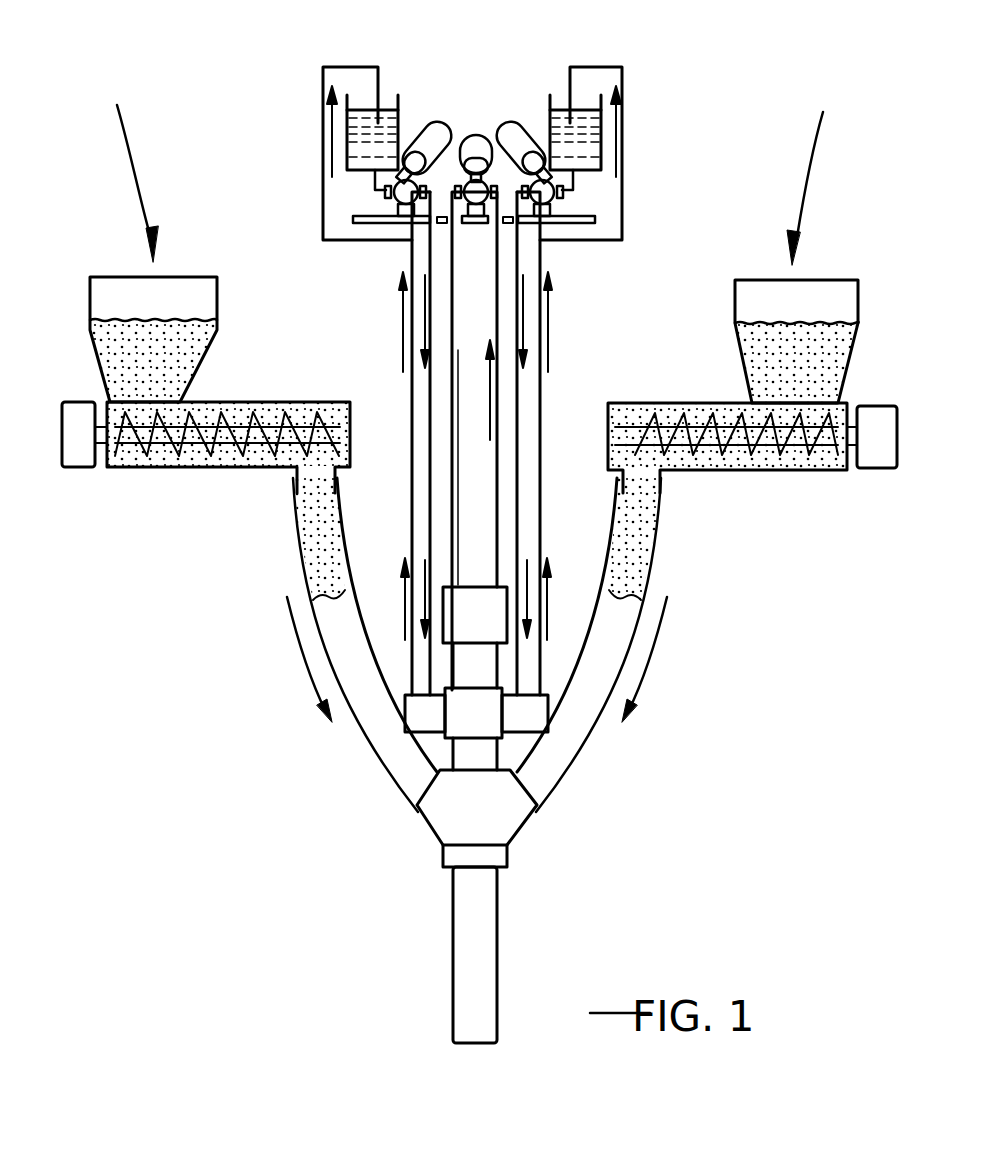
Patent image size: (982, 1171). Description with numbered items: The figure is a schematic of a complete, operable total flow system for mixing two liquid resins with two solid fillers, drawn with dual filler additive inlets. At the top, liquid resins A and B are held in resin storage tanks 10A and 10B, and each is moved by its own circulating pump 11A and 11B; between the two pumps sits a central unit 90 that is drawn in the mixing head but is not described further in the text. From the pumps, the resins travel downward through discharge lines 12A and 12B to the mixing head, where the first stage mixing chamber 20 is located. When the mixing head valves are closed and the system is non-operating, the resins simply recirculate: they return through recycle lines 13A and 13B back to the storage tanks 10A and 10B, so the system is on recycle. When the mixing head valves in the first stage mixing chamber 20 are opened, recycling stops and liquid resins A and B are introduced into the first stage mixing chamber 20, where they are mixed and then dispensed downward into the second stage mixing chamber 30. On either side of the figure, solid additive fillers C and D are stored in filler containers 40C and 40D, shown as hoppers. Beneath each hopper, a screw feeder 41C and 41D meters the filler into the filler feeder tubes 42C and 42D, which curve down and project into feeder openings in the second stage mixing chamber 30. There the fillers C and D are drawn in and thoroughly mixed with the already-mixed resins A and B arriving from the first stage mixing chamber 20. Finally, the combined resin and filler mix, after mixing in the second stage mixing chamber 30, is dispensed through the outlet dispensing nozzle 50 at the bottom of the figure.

The resin storage tank 10A is at (388, 100).
The resin storage tank 10B is at (562, 97).
The circulating pump 11A is at (428, 137).
The circulating pump 11B is at (518, 133).
The central valve actuator 90 is at (477, 137).
The discharge line 12A is at (412, 260).
The discharge line 12B is at (540, 258).
The recycle line 13A is at (412, 386).
The recycle line 13B is at (540, 386).
The first stage mixing chamber 20 is at (490, 728).
The second stage mixing chamber 30 is at (492, 822).
The outlet dispensing nozzle 50 is at (467, 932).
The filler container 40C is at (118, 290).
The filler container 40D is at (827, 280).
The screw feeder 41C is at (196, 460).
The screw feeder 41D is at (704, 463).
The filler feeder tube 42C is at (315, 532).
The filler feeder tube 42D is at (658, 540).
The liquid resin A is at (375, 150).
The liquid resin B is at (573, 150).
The solid additive filler C is at (127, 354).
The solid additive filler D is at (833, 358).